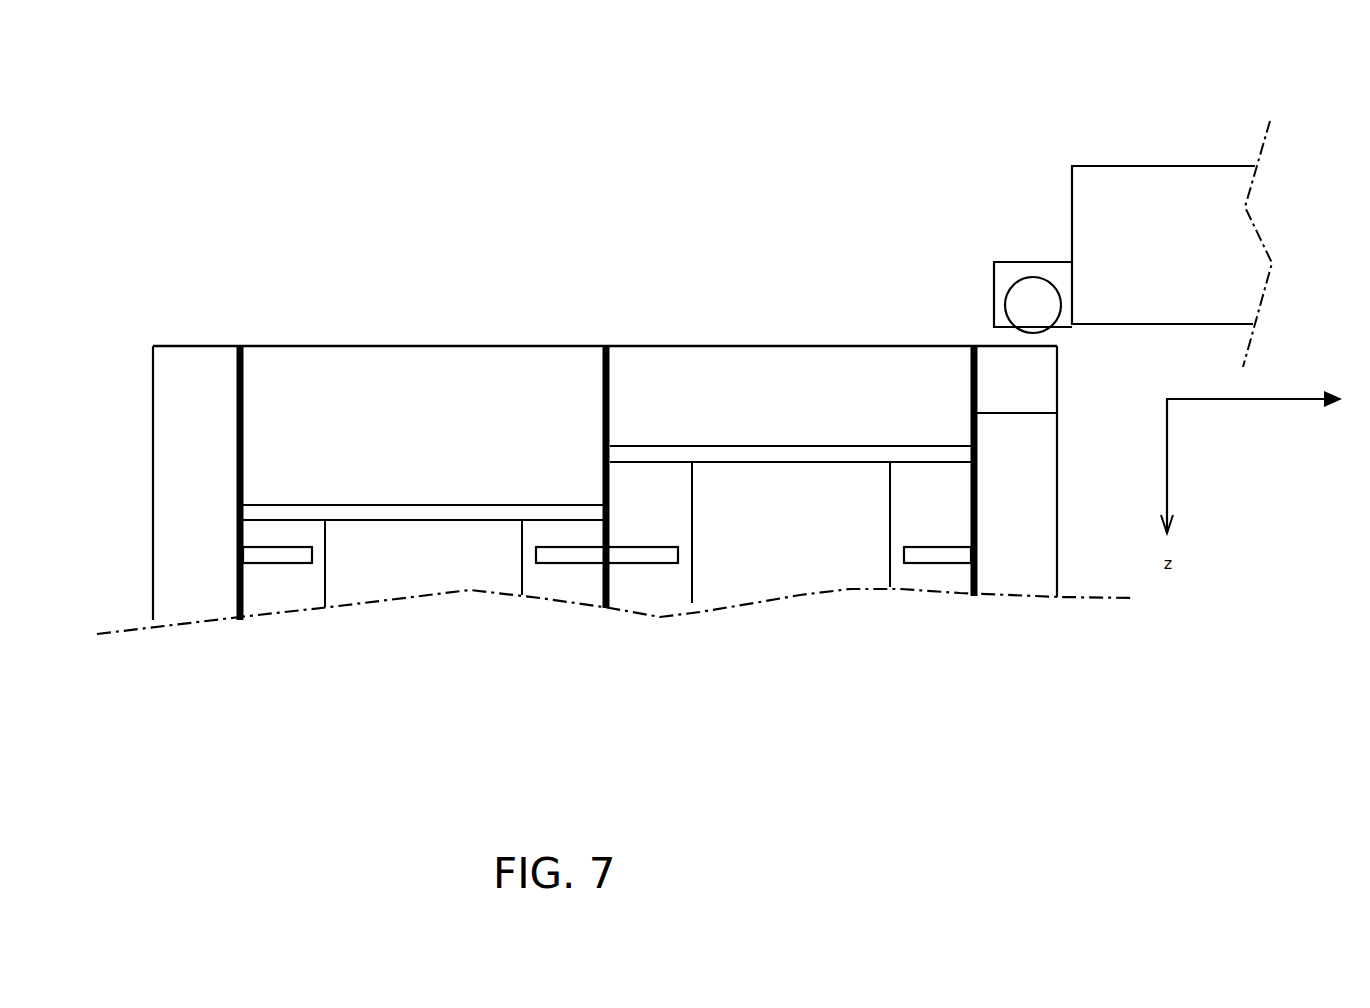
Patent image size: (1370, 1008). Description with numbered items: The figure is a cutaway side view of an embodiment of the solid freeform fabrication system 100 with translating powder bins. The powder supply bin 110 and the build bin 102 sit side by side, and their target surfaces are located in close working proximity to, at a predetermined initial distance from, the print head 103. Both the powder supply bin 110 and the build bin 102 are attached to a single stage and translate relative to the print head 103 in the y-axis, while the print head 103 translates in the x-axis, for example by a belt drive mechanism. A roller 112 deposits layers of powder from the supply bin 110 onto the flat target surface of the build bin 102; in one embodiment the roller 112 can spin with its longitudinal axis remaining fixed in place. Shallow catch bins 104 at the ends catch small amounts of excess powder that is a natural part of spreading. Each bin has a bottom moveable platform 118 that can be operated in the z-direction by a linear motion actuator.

The solid freeform fabrication system 100 is at (796, 88).
The build bin 102 is at (731, 370).
The print head 103 is at (1168, 195).
The catch bin 104 is at (193, 373).
The powder supply bin 110 is at (462, 372).
The roller 112 is at (1040, 295).
The bottom moveable platform 118 is at (815, 456).